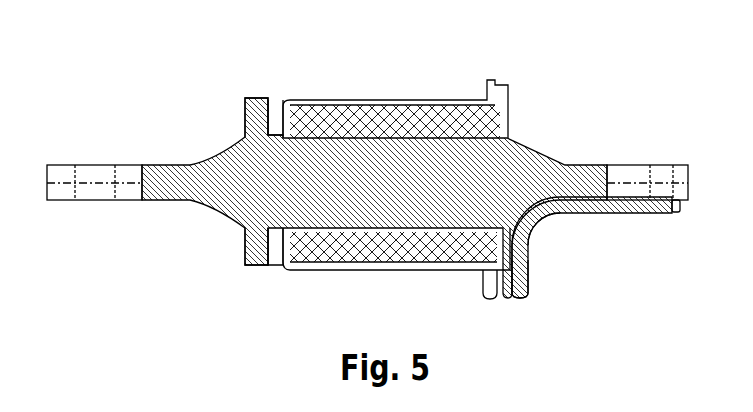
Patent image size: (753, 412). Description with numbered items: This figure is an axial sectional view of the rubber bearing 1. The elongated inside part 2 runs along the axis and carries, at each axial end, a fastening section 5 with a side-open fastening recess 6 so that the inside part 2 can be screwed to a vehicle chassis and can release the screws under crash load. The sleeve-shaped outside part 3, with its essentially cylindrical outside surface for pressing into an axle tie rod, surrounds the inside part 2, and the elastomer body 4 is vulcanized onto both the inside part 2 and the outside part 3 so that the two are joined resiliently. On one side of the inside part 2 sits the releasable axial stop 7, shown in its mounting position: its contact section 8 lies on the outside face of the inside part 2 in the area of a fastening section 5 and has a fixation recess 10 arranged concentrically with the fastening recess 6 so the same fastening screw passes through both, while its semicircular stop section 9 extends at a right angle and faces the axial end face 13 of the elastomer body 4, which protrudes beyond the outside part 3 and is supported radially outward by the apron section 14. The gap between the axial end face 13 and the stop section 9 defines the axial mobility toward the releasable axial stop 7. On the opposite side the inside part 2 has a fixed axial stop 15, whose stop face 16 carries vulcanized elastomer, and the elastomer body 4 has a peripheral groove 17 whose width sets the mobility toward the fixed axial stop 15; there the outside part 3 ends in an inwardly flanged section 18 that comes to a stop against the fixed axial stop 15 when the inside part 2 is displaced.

The rubber bearing 1 is at (92, 342).
The inside part 2 is at (230, 222).
The outside part 3 is at (386, 98).
The elastomer body 4 is at (438, 100).
The fastening section 5 is at (78, 160).
The fastening recess 6 is at (117, 163).
The releasable axial stop 7 is at (540, 250).
The contact section 8 is at (600, 216).
The stop section 9 is at (522, 300).
The fixation recess 10 is at (652, 215).
The axial end face 13 is at (478, 272).
The apron section 14 is at (485, 298).
The fixed axial stop 15 is at (256, 97).
The stop face 16 is at (252, 265).
The groove 17 is at (283, 268).
The flanged section 18 is at (278, 96).